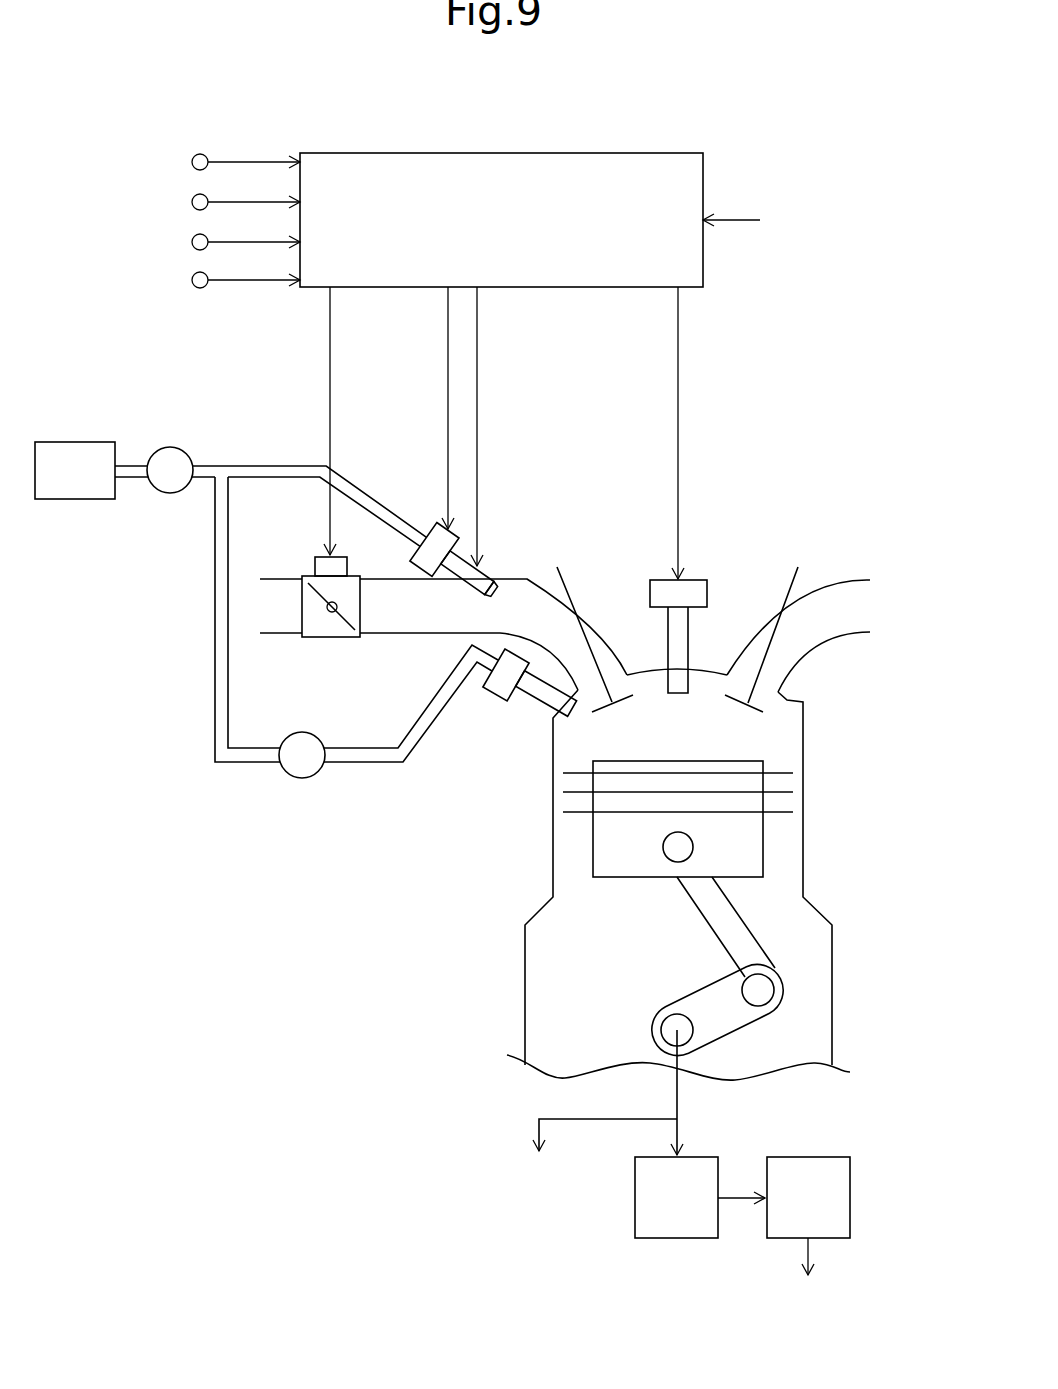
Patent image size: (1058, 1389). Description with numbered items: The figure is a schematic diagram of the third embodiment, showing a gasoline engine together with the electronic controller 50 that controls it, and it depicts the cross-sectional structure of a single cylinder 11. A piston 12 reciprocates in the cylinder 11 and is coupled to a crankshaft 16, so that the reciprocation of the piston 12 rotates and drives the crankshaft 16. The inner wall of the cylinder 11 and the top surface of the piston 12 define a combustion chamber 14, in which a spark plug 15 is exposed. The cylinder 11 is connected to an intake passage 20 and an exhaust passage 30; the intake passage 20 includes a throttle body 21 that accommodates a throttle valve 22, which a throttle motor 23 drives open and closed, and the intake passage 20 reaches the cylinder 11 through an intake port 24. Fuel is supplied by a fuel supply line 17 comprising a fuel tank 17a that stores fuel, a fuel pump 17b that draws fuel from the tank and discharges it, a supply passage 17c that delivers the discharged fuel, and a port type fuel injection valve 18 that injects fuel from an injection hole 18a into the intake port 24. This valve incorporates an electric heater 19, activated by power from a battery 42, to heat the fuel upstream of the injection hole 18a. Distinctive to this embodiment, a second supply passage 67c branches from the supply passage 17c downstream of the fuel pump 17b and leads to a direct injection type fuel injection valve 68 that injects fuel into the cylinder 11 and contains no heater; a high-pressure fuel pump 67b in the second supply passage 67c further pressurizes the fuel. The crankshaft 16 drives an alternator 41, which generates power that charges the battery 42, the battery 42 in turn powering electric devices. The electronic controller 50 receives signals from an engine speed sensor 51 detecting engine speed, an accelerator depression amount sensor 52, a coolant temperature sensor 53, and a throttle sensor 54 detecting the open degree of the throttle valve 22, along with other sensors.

The electronic controller 50 is at (595, 153).
The engine speed sensor 51 is at (190, 163).
The accelerator depression amount sensor 52 is at (190, 203).
The coolant temperature sensor 53 is at (190, 243).
The throttle sensor 54 is at (190, 281).
The fuel supply line 17 is at (231, 456).
The fuel tank 17a is at (78, 442).
The fuel pump 17b is at (172, 447).
The supply passage 17c is at (318, 462).
The throttle motor 23 is at (335, 555).
The intake passage 20 is at (321, 616).
The throttle body 21 is at (318, 640).
The throttle valve 22 is at (357, 637).
The intake port 24 is at (529, 586).
The port type fuel injection valve 18 is at (464, 460).
The injection hole 18a is at (500, 593).
The electric heater 19 is at (488, 562).
The cylinder 11 is at (791, 754).
The combustion chamber 14 is at (694, 750).
The exhaust passage 30 is at (838, 582).
The spark plug 15 is at (697, 580).
The piston 12 is at (593, 858).
The crankshaft 16 is at (686, 999).
The direct injection type fuel injection valve 68 is at (524, 704).
The second supply passage 67c is at (264, 766).
The high-pressure fuel pump 67b is at (304, 776).
The alternator 41 is at (701, 1156).
The battery 42 is at (834, 1156).